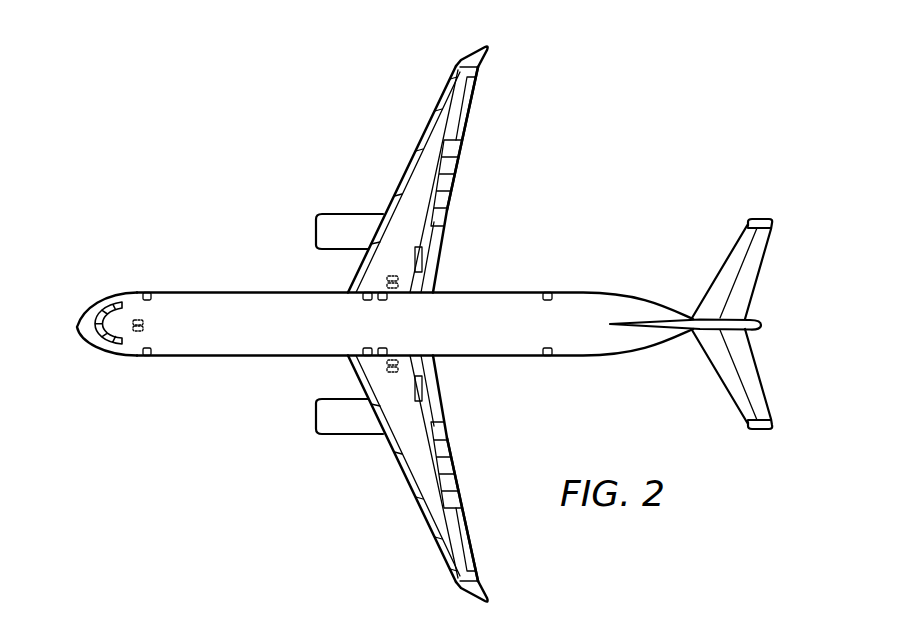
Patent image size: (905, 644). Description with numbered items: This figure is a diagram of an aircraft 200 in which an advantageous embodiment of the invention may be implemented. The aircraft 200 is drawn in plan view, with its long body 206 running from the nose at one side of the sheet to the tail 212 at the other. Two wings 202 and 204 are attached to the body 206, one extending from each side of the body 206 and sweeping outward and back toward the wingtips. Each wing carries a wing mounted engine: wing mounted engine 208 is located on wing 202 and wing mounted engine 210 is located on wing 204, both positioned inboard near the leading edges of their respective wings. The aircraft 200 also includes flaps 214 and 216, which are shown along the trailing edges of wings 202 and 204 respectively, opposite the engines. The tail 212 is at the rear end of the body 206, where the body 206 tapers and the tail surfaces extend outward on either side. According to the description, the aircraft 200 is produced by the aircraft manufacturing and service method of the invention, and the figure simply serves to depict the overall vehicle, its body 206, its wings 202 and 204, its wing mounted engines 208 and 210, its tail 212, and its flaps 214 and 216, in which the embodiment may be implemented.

The aircraft 200 is at (434, 323).
The wing 202 is at (400, 170).
The wing 204 is at (400, 480).
The body 206 is at (213, 291).
The wing mounted engine 208 is at (316, 229).
The wing mounted engine 210 is at (316, 419).
The tail 212 is at (760, 218).
The flap 214 is at (455, 188).
The flap 216 is at (455, 461).